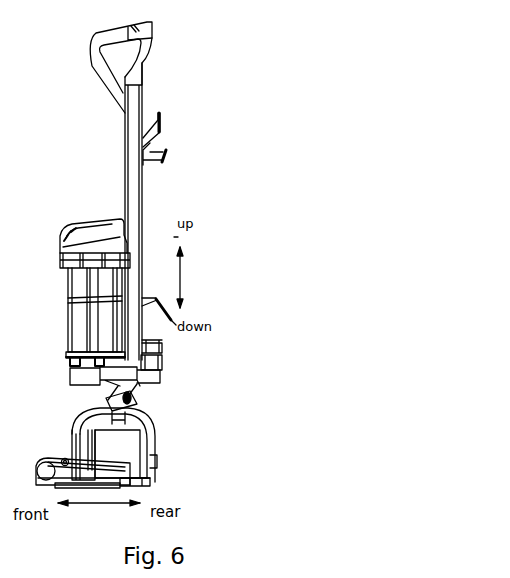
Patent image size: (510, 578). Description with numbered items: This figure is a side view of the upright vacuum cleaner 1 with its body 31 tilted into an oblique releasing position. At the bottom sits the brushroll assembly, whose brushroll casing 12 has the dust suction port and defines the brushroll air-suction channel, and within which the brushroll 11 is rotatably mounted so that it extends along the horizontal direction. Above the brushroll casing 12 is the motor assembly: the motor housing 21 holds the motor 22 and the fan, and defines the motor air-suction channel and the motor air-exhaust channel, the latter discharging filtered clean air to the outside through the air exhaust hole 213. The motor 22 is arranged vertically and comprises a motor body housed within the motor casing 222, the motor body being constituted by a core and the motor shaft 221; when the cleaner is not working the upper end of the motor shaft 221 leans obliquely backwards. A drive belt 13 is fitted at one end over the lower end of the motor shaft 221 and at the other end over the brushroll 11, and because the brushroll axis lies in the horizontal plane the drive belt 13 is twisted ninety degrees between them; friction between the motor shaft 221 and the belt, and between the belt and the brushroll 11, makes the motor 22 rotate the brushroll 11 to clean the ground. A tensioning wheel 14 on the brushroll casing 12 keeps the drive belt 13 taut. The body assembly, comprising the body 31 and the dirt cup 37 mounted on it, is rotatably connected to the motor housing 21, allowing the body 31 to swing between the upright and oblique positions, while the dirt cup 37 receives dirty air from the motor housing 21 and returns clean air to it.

The upright vacuum cleaner 1 is at (180, 83).
The body 31 is at (141, 214).
The dirt cup 37 is at (69, 288).
The motor housing 21 is at (141, 416).
The motor 22 is at (155, 433).
The air exhaust hole 213 is at (75, 429).
The motor casing 222 is at (157, 466).
The motor shaft 221 is at (136, 485).
The drive belt 13 is at (98, 484).
The brushroll 11 is at (38, 487).
The brushroll casing 12 is at (43, 469).
The tensioning wheel 14 is at (61, 461).